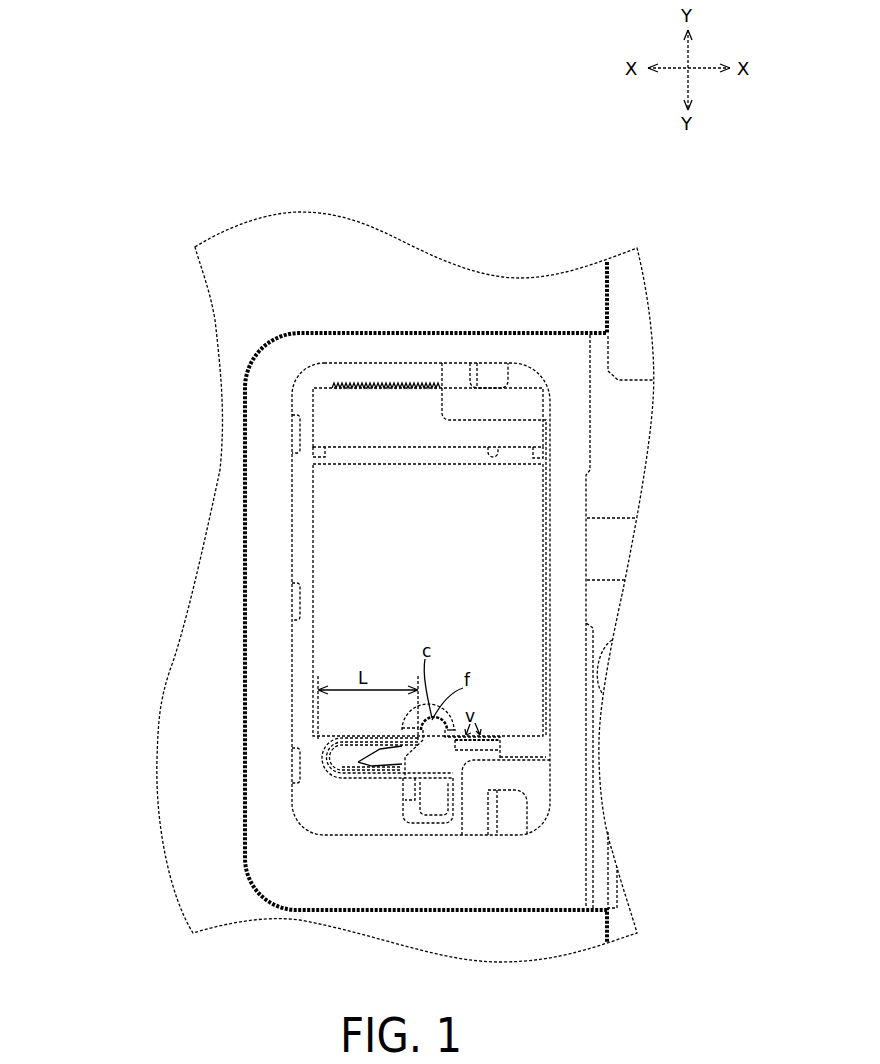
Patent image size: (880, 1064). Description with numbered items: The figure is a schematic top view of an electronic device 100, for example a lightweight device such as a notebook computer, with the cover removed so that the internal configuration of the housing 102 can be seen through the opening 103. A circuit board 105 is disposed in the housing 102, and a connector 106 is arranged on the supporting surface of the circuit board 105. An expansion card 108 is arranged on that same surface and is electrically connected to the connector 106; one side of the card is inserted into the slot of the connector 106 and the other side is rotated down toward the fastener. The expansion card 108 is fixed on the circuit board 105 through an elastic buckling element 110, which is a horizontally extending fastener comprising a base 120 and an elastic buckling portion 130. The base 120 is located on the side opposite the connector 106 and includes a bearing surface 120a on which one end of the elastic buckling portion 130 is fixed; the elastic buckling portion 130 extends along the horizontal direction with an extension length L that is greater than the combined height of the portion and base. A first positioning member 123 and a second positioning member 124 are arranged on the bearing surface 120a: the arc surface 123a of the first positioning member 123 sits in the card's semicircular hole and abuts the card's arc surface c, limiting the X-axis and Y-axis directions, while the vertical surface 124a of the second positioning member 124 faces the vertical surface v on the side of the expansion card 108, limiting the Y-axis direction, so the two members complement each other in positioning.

The electronic device 100 is at (681, 229).
The housing 102 is at (614, 489).
The opening 103 is at (563, 601).
The circuit board 105 is at (527, 750).
The connector 106 is at (350, 413).
The expansion card 108 is at (372, 576).
The elastic buckling element 110 is at (68, 805).
The base 120 is at (386, 800).
The bearing surface 120a is at (440, 797).
The first positioning member 123 is at (448, 735).
The arc surface 123a is at (430, 717).
The second positioning member 124 is at (478, 738).
The vertical surface 124a is at (470, 738).
The elastic buckling portion 130 is at (341, 790).